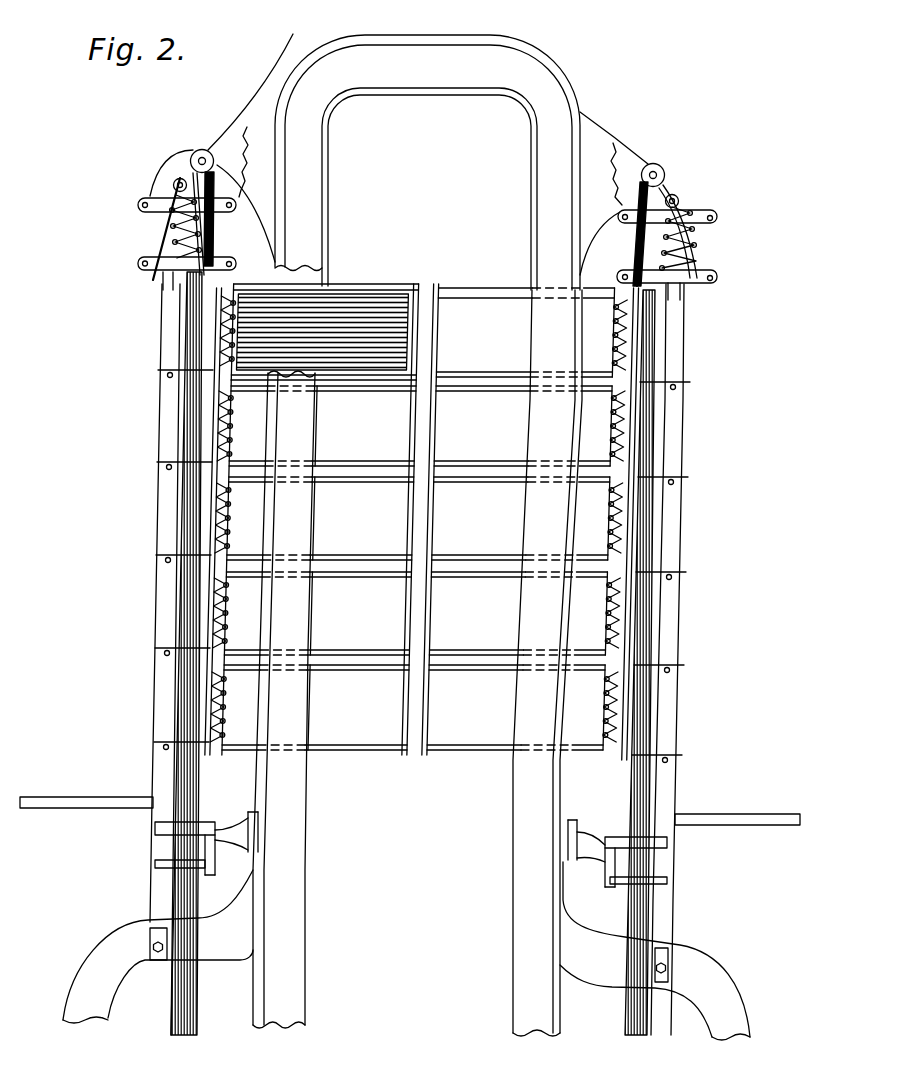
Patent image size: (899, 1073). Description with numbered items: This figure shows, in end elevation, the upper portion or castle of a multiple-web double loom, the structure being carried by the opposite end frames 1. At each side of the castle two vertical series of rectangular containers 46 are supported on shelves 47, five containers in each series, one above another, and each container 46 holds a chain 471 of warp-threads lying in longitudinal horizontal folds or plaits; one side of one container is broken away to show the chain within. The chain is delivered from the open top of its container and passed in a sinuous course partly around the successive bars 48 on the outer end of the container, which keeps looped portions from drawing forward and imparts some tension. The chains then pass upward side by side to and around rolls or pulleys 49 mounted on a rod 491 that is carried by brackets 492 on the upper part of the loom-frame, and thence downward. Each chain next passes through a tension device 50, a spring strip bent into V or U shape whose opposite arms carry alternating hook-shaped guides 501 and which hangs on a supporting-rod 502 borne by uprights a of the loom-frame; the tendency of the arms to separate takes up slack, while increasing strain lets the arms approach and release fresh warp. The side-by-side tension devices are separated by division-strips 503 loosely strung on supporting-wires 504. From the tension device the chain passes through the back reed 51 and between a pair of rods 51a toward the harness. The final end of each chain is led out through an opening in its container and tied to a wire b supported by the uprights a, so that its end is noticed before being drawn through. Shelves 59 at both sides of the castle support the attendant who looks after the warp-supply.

The end frame 1 is at (95, 948).
The uprights a is at (160, 512).
The wire b is at (168, 375).
The container 46 is at (348, 792).
The shelf 47 is at (505, 383).
The bar 48 is at (224, 408).
The roll or pulley 49 is at (199, 153).
The tension device 50 is at (160, 238).
The back reed 51 is at (157, 828).
The pair of rods 51a is at (725, 897).
The shelf 59 is at (75, 795).
The chain of warp-threads 471 is at (378, 300).
The rod 491 is at (203, 149).
The bracket 492 is at (214, 136).
The hook-shaped guide 501 is at (175, 292).
The supporting-rod 502 is at (176, 190).
The division-strip 503 is at (246, 128).
The supporting-wire 504 is at (140, 204).